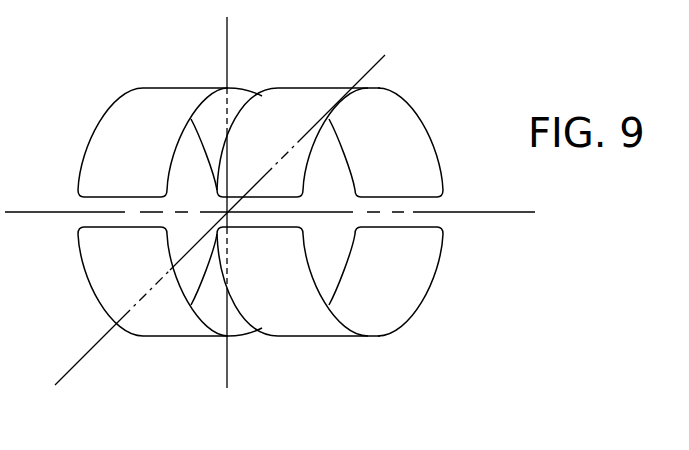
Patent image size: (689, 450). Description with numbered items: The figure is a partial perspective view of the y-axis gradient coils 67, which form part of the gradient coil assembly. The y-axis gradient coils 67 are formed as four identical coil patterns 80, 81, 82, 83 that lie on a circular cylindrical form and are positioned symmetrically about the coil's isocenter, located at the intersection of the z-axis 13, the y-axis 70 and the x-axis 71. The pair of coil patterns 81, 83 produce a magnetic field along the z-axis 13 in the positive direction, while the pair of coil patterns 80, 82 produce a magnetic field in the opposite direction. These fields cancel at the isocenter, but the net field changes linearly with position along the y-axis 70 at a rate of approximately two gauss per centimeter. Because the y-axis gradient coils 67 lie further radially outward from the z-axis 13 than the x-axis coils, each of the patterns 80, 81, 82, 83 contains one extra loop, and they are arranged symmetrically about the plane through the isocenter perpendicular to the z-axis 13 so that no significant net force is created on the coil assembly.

The z-axis 13 is at (477, 211).
The y-axis gradient coils 67 is at (290, 212).
The y-axis 70 is at (229, 56).
The x-axis 71 is at (370, 70).
The coil pattern 80 is at (394, 286).
The coil pattern 81 is at (386, 152).
The coil pattern 82 is at (129, 271).
The coil pattern 83 is at (150, 139).